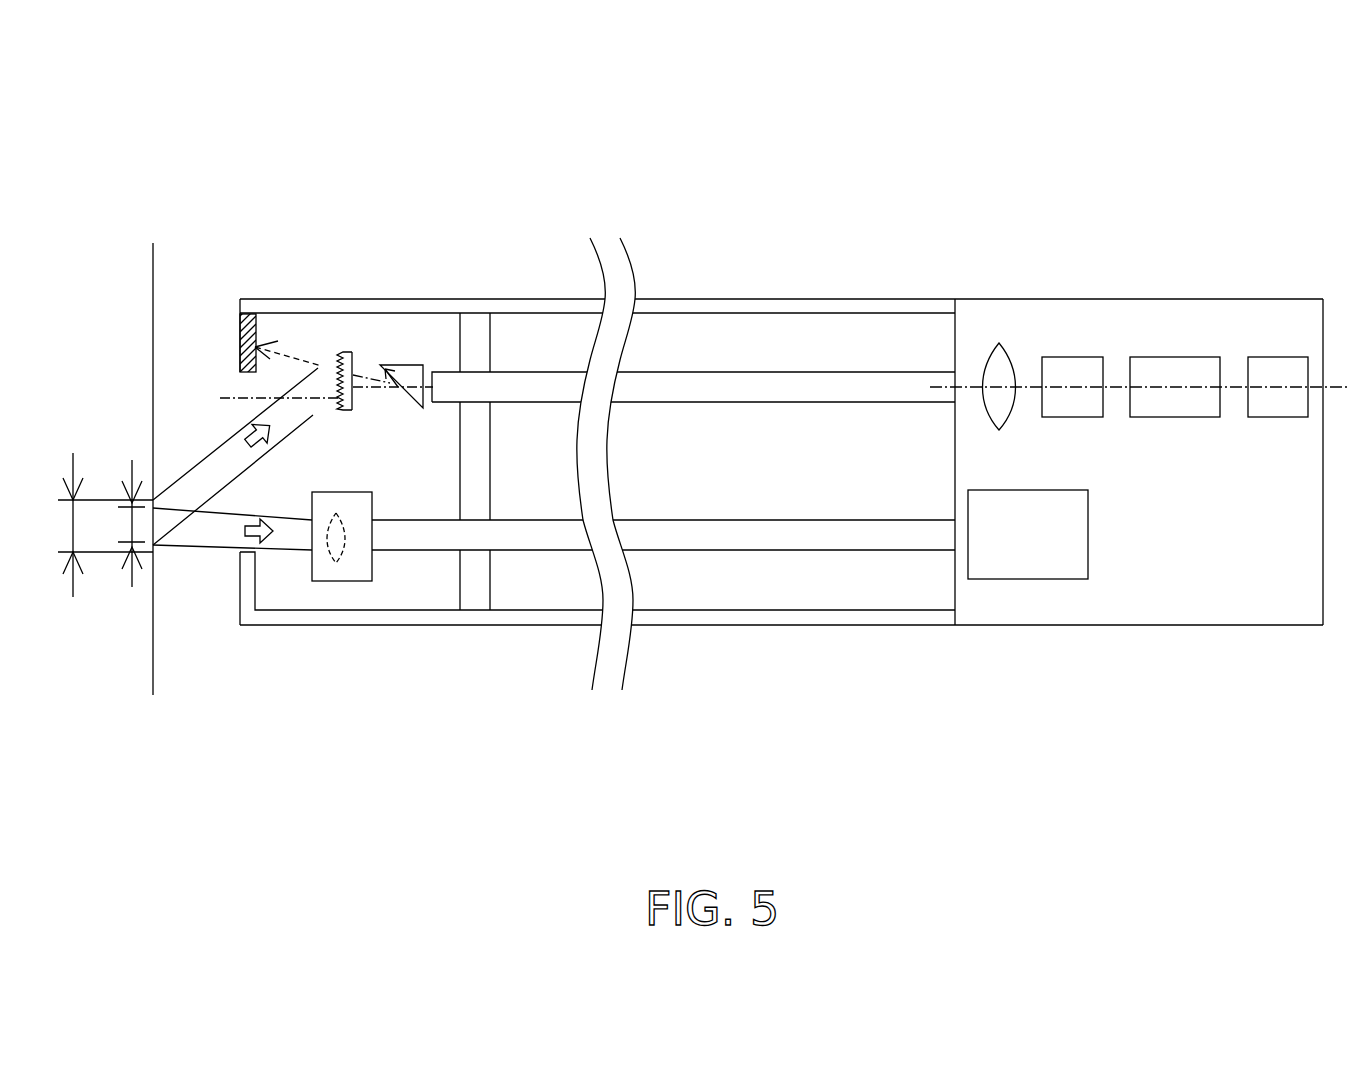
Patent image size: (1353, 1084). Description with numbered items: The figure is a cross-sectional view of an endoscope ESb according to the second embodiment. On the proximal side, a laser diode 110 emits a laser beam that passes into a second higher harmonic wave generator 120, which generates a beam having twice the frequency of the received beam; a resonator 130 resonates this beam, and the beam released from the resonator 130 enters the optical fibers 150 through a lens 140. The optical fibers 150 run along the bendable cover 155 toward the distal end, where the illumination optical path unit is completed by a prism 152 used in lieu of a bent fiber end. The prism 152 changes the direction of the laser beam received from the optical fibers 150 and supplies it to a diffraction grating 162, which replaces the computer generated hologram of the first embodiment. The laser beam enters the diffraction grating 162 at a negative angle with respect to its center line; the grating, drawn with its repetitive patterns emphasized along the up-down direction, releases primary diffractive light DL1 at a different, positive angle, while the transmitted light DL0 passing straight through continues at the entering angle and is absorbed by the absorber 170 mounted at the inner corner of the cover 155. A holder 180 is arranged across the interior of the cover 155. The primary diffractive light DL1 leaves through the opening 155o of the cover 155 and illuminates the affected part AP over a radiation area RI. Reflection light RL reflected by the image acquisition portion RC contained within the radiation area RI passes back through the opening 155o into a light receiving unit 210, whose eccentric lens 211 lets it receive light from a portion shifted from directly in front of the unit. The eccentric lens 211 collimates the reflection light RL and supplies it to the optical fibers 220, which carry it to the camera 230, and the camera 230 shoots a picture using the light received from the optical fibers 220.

The laser diode 110 is at (1282, 357).
The second higher harmonic wave generator 120 is at (1180, 357).
The resonator 130 is at (1075, 357).
The lens 140 is at (1000, 343).
The optical fibers 150 is at (876, 372).
The prism 152 is at (402, 362).
The cover 155 is at (708, 299).
The opening 155o is at (240, 382).
The diffraction grating 162 is at (345, 352).
The absorber 170 is at (257, 333).
The holder 180 is at (490, 328).
The light receiving unit 210 is at (362, 582).
The eccentric lens 211 is at (339, 563).
The optical fibers 220 is at (876, 552).
The camera 230 is at (1000, 582).
The affected part AP is at (153, 270).
The transmitted light DL0 is at (290, 345).
The primary diffractive light DL1 is at (180, 478).
The radiation area RI is at (99, 525).
The image acquisition portion RC is at (117, 523).
The reflection light RL is at (205, 548).
The endoscope ESb is at (1198, 185).